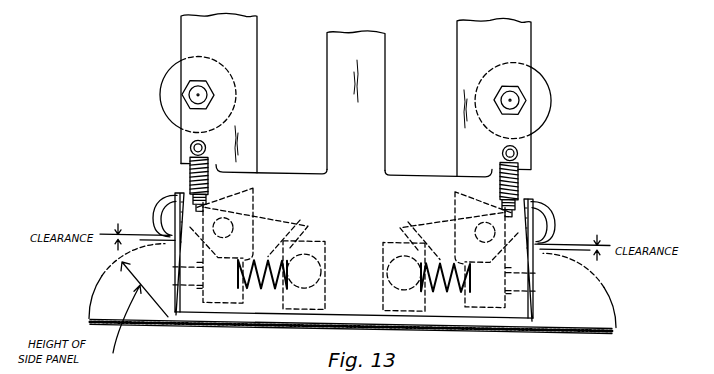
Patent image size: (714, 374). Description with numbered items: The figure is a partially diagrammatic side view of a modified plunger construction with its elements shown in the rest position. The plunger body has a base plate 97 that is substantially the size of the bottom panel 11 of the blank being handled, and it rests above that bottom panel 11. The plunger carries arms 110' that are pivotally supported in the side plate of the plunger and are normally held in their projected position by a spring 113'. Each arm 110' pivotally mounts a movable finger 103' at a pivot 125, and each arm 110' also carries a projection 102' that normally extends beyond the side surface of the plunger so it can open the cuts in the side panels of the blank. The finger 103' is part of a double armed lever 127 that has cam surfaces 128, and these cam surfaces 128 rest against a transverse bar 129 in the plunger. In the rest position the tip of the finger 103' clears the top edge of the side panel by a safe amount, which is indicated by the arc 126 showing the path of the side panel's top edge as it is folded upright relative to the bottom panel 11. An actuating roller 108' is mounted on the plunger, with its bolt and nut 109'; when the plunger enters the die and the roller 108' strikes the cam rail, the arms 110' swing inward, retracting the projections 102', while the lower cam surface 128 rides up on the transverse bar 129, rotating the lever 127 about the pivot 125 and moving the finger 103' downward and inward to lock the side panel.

The bolt and nut 109' is at (322, 90).
The actuating roller 108' is at (334, 97).
The arm 110' is at (356, 95).
The movable finger 103' is at (151, 247).
The projection 102' is at (556, 260).
The double armed lever 127 is at (255, 192).
The pivot 125 is at (255, 212).
The cam surface 128 is at (295, 218).
The transverse bar 129 is at (380, 262).
The spring 113' is at (354, 259).
The arc 126 is at (105, 273).
The bottom panel 11 is at (290, 326).
The base plate 97 is at (440, 322).